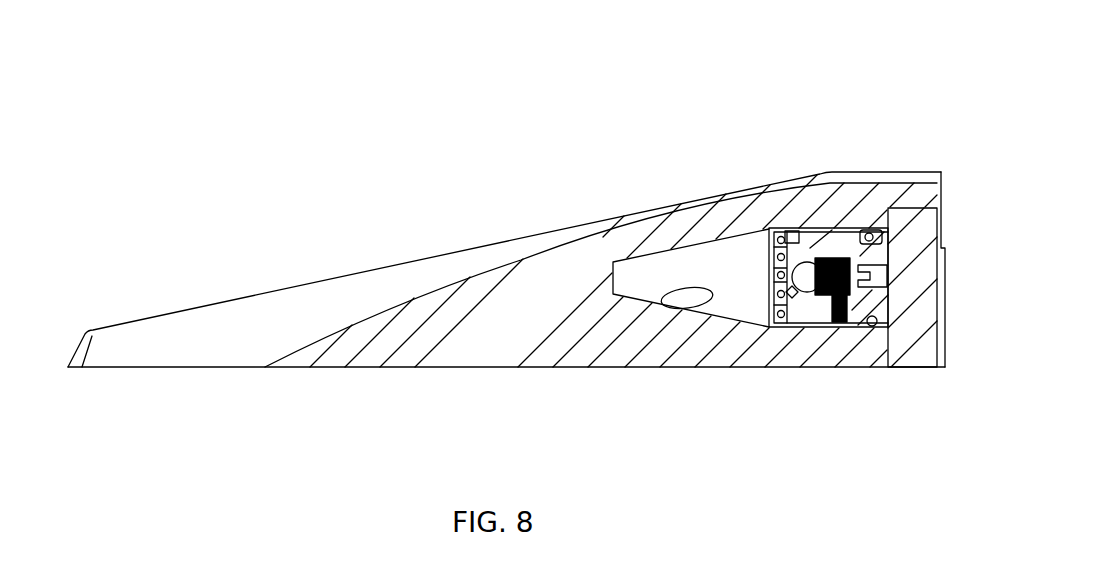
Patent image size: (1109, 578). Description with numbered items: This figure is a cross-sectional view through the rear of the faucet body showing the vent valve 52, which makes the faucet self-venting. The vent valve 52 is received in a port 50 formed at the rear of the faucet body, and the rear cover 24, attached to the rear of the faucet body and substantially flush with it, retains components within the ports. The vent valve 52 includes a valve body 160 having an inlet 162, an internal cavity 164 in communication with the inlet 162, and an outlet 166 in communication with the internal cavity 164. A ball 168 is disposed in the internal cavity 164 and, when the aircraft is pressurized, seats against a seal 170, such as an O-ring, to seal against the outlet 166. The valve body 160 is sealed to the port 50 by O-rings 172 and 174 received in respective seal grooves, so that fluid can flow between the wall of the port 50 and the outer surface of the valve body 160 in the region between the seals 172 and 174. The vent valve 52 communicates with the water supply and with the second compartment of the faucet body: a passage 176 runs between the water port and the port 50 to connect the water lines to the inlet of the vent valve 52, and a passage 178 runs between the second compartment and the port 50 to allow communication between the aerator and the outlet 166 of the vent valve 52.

The rear cover 24 is at (902, 260).
The port 50 is at (750, 250).
The vent valve 52 is at (743, 268).
The valve body 160 is at (840, 250).
The inlet 162 is at (840, 317).
The internal cavity 164 is at (837, 285).
The outlet 166 is at (772, 287).
The ball 168 is at (808, 263).
The seal 170 is at (790, 302).
The O-ring 172 is at (787, 230).
The O-ring 174 is at (865, 233).
The passage 176 is at (828, 332).
The passage 178 is at (687, 293).